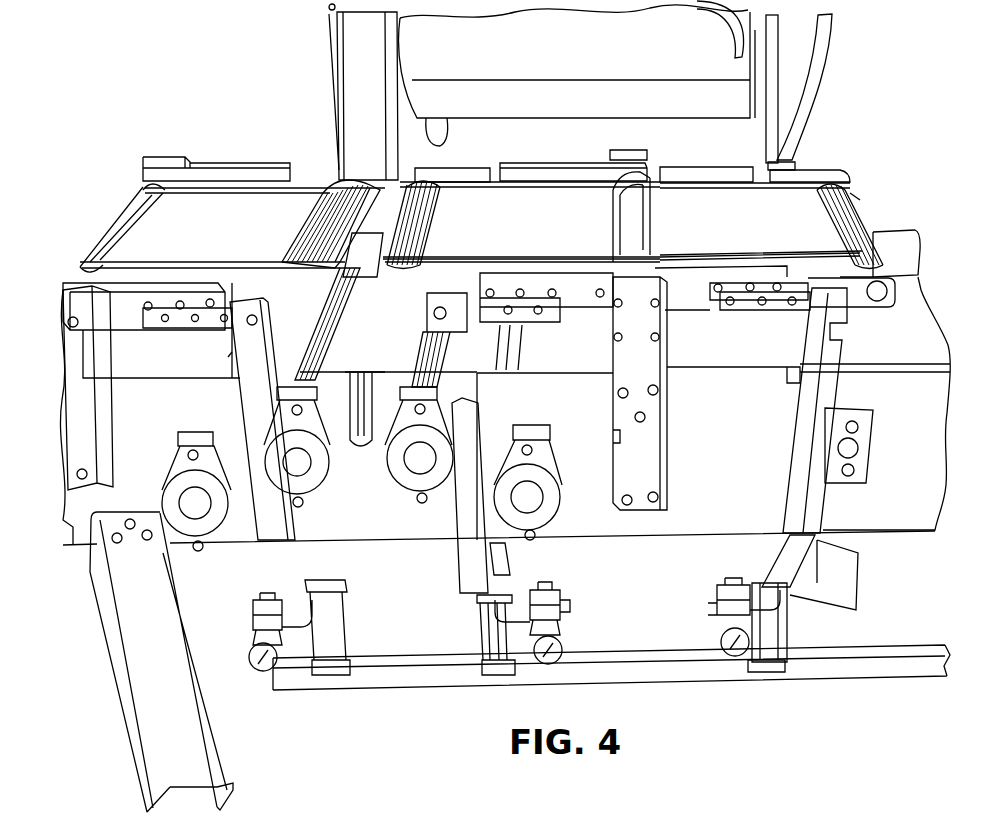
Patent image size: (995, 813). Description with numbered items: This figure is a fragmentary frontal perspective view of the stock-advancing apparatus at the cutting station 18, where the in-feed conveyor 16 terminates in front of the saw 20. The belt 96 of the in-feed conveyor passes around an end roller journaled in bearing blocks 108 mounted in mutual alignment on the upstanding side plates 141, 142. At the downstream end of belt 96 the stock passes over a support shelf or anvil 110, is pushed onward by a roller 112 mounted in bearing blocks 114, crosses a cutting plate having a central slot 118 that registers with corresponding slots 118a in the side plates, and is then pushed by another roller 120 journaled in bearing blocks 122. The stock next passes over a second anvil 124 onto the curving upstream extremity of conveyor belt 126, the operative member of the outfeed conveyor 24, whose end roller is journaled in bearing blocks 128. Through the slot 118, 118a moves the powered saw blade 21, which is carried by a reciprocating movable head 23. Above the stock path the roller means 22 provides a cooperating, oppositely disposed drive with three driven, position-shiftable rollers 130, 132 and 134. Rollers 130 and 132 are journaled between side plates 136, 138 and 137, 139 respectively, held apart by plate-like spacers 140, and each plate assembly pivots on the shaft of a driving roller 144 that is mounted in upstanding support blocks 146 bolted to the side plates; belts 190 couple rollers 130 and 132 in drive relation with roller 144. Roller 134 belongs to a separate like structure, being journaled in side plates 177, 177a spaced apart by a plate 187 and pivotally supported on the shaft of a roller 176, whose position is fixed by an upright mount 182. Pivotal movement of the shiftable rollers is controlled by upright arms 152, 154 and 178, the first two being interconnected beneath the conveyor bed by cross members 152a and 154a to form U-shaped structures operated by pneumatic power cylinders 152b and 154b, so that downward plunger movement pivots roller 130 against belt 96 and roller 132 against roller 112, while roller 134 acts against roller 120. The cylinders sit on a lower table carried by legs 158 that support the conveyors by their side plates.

The in-feed conveyor 16 is at (916, 306).
The cutting station 18 is at (256, 104).
The saw 20 is at (803, 45).
The saw blade 21 is at (440, 131).
The roller means 22 is at (795, 200).
The movable head 23 is at (577, 61).
The outfeed conveyor 24 is at (224, 361).
The belt 96 is at (499, 405).
The bearing blocks 108 is at (545, 518).
The support shelf or anvil 110 is at (488, 347).
The roller 112 is at (430, 340).
The bearing blocks 114 is at (395, 512).
The central slot 118 is at (362, 349).
The slots 118a is at (360, 430).
The roller 120 is at (367, 262).
The bearing blocks 122 is at (316, 482).
The support shelf or anvil 124 is at (312, 324).
The conveyor belt 126 is at (161, 330).
The bearing blocks 128 is at (213, 522).
The roller 130 is at (862, 205).
The roller 132 is at (433, 207).
The roller 134 is at (330, 190).
The side plate 136 is at (697, 303).
The side plate 137 is at (510, 290).
The side plate 138 is at (715, 167).
The side plate 139 is at (545, 163).
The plate-like spacers 140 is at (622, 222).
The side plate 141 is at (638, 453).
The side plate 142 is at (900, 242).
The driving roller 144 is at (640, 190).
The upstanding support blocks 146 is at (625, 152).
The upright arm 152 is at (812, 395).
The cross member 152a is at (770, 542).
The pneumatic power cylinder 152b is at (787, 640).
The upright arm 154 is at (470, 415).
The cross member 154a is at (510, 550).
The pneumatic power cylinder 154b is at (490, 636).
The legs 158 is at (210, 762).
The roller 176 is at (125, 220).
The side plate 177 is at (147, 306).
The side plate 177a is at (233, 168).
The upright arm 178 is at (290, 486).
The upright mount 182 is at (110, 462).
The plate 187 is at (232, 228).
The belts 190 is at (760, 253).